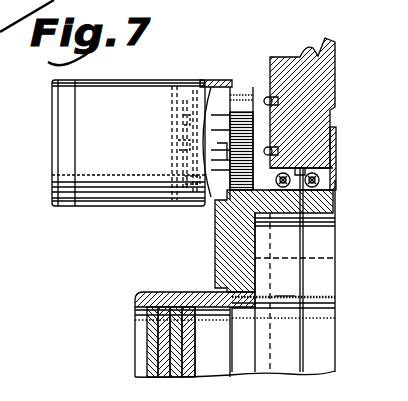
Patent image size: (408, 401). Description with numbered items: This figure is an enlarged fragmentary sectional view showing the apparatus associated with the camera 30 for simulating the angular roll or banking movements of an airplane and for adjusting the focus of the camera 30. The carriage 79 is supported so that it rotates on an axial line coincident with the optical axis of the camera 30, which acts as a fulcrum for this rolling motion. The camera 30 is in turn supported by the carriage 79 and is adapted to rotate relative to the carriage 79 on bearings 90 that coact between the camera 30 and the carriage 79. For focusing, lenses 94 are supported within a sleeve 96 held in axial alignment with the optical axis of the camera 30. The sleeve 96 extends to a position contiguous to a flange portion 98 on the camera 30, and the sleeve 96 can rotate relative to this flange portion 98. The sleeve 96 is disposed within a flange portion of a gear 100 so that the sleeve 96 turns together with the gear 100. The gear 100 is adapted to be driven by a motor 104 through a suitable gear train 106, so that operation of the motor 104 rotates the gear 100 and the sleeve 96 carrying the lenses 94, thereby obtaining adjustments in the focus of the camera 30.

The camera 30 is at (322, 214).
The carriage 79 is at (318, 60).
The bearings 90 is at (248, 193).
The lenses 94 is at (170, 366).
The sleeve 96 is at (218, 310).
The flange portion 98 is at (284, 297).
The gear 100 is at (244, 118).
The motor 104 is at (137, 178).
The gear train 106 is at (188, 113).